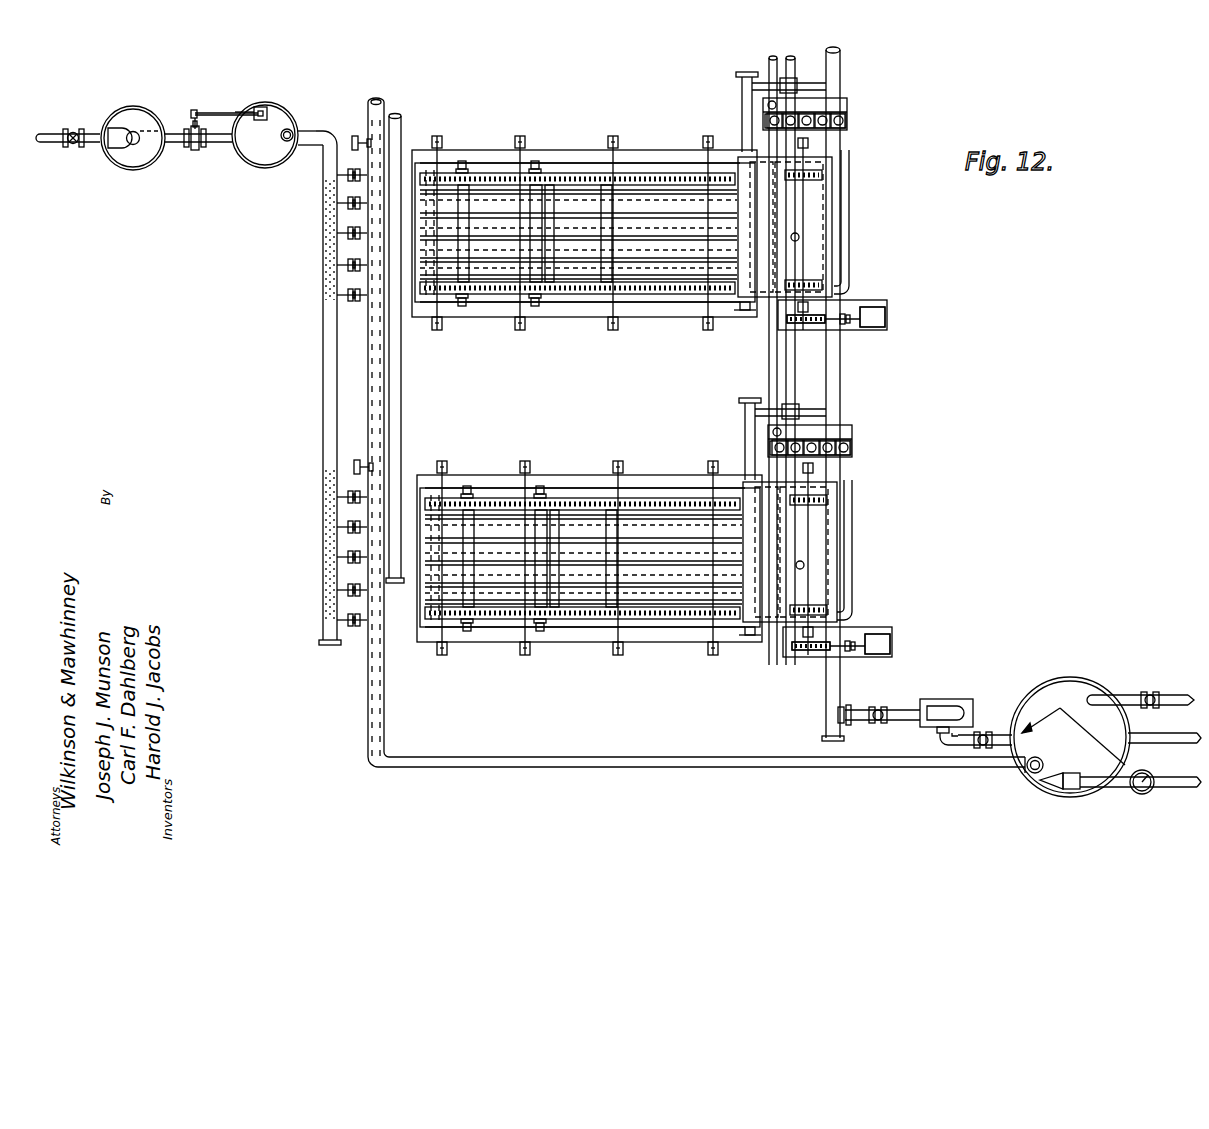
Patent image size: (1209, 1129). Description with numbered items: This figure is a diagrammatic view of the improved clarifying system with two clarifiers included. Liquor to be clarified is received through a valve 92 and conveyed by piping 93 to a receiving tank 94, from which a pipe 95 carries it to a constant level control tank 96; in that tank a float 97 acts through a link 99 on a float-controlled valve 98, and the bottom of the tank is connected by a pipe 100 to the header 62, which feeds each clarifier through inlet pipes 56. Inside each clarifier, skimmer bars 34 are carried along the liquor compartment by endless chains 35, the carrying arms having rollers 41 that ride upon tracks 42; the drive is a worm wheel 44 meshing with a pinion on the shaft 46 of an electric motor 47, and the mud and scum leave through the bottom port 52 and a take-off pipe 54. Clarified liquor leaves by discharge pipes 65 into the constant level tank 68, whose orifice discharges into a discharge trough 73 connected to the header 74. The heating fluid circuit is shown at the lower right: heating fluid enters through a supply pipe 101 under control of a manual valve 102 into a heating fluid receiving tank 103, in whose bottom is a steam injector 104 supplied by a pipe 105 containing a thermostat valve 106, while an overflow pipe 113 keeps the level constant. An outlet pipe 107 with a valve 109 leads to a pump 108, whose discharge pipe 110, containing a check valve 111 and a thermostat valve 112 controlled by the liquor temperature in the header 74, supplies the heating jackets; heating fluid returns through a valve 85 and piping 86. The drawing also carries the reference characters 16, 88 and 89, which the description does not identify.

The tie bolts 16 is at (571, 240).
The skimmer bars 34 is at (540, 195).
The endless chains 35 is at (640, 175).
The rollers 41 is at (552, 190).
The tracks 42 is at (625, 160).
The worm wheel 44 is at (790, 325).
The shaft 46 is at (848, 312).
The electric motor 47 is at (885, 312).
The bottom port 52 is at (800, 237).
The take-off pipe 54 is at (840, 55).
The inlet pipe 56 is at (346, 268).
The header 62 is at (327, 352).
The discharge pipes 65 is at (849, 246).
The constant level tank 68 is at (847, 121).
The discharge trough 73 is at (848, 100).
The header 74 is at (768, 60).
The valve 85 is at (355, 137).
The piping 86 is at (380, 100).
The pipe 88 is at (400, 117).
The pipe 89 is at (741, 90).
The valve 92 is at (73, 147).
The piping 93 is at (42, 148).
The receiving tank 94 is at (133, 170).
The pipe 95 is at (175, 143).
The constant level control tank 96 is at (262, 168).
The float 97 is at (270, 108).
The float-controlled valve 98 is at (195, 150).
The link 99 is at (221, 112).
The pipe 100 is at (312, 131).
The supply pipe 101 is at (1180, 693).
The valve 102 is at (1150, 691).
The heating fluid receiving tank 103 is at (1075, 677).
The steam injector 104 is at (1060, 790).
The pipe 105 is at (1180, 777).
The thermostat valve 106 is at (1150, 793).
The outlet pipe 107 is at (1000, 734).
The pump 108 is at (945, 699).
The valve 109 is at (983, 752).
The pipe 110 is at (858, 708).
The check valve 111 is at (882, 706).
The thermostat valve 112 is at (798, 86).
The overflow pipe 113 is at (1175, 726).